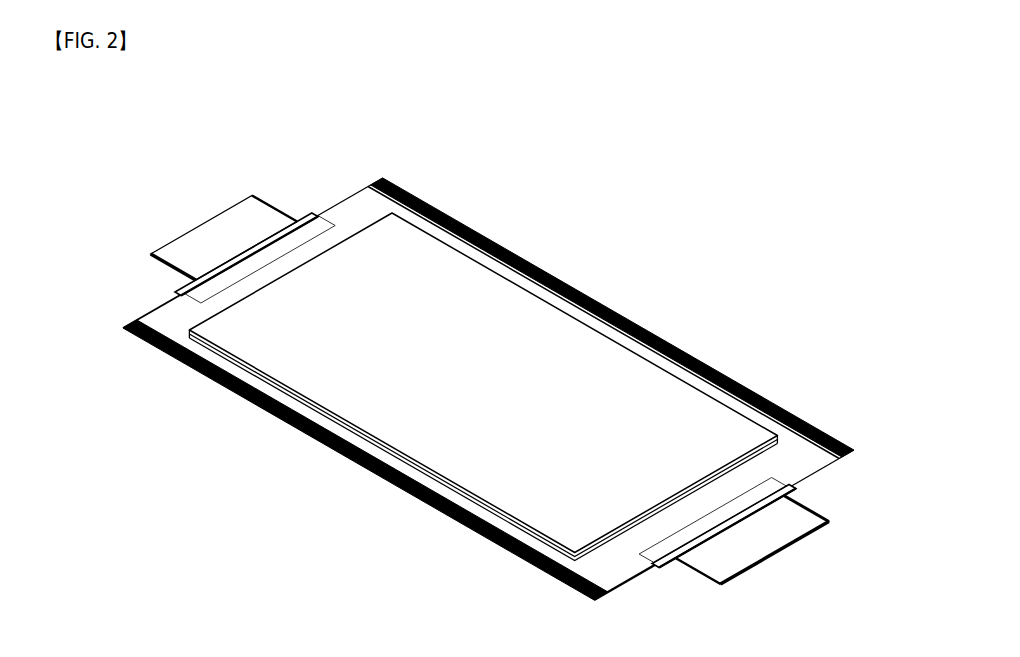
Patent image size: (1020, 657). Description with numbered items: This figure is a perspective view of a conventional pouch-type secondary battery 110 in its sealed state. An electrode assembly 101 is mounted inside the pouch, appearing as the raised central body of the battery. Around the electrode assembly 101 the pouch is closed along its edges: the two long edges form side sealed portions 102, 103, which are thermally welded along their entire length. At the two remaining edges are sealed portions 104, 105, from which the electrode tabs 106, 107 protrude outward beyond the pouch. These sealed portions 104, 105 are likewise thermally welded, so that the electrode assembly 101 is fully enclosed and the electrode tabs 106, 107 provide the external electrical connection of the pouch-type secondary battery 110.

The pouch-type secondary battery 110 is at (106, 153).
The electrode assembly 101 is at (557, 342).
The side sealed portion 102 is at (330, 447).
The side sealed portion 103 is at (703, 366).
The sealed portion 104 is at (335, 210).
The sealed portion 105 is at (802, 472).
The electrode tab 106 is at (218, 227).
The electrode tab 107 is at (753, 567).